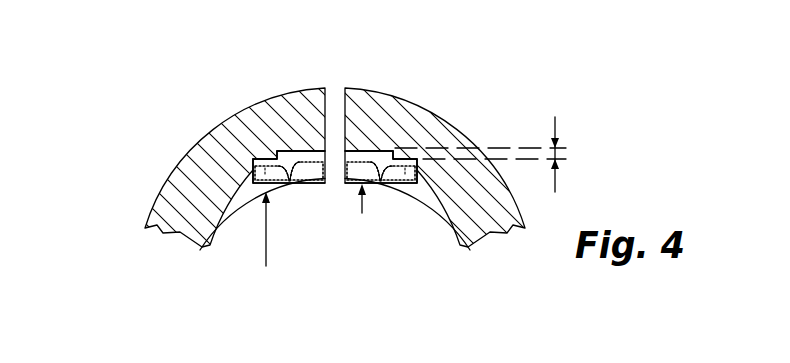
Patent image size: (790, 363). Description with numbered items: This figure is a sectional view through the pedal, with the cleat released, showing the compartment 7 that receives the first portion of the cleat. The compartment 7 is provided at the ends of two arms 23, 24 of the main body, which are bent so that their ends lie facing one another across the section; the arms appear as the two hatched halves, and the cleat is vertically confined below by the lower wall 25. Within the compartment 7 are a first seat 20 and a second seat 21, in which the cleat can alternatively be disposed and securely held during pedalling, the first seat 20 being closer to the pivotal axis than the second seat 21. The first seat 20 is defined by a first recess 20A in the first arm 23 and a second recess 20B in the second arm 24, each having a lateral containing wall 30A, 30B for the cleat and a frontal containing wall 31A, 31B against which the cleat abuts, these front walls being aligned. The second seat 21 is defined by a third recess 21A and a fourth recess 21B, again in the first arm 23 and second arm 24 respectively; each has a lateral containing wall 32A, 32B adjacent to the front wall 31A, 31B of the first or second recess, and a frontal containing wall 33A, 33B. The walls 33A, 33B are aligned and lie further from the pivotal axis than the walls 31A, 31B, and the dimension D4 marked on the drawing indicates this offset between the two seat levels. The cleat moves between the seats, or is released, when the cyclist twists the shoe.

The compartment 7 is at (314, 237).
The first seat 20 is at (252, 183).
The first recess 20A is at (288, 188).
The second recess 20B is at (382, 188).
The second seat 21 is at (276, 152).
The third recess 21A is at (290, 187).
The fourth recess 21B is at (371, 187).
The first arm 23 is at (150, 226).
The second arm 24 is at (493, 235).
The lower wall 25 is at (230, 220).
The lateral containing wall 30A is at (250, 168).
The lateral containing wall 30B is at (425, 158).
The frontal containing wall 31A is at (257, 155).
The frontal containing wall 31B is at (404, 157).
The lateral containing wall 32A is at (262, 157).
The lateral containing wall 32B is at (405, 153).
The frontal containing wall 33A is at (289, 158).
The frontal containing wall 33B is at (357, 149).
The groove depth difference D4 is at (556, 185).